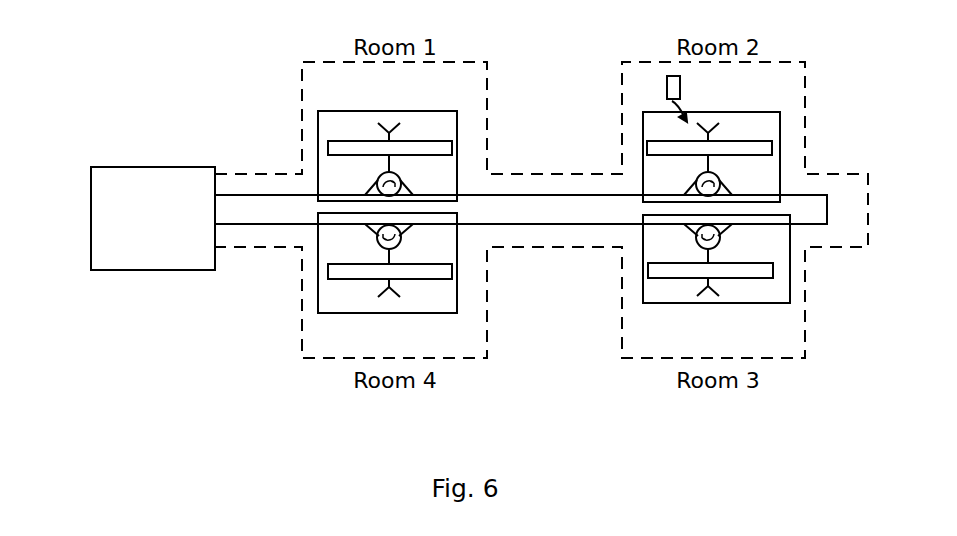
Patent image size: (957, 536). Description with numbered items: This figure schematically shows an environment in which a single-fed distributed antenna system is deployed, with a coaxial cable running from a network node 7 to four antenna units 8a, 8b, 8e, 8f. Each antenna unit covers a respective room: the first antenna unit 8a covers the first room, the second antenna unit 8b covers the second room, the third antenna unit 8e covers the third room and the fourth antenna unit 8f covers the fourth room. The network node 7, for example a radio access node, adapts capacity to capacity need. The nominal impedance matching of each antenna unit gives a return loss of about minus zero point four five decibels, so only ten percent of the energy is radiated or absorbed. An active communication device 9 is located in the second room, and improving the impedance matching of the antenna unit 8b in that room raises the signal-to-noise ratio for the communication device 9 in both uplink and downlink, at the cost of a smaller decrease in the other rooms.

The network node 7 is at (100, 233).
The first antenna unit 8a is at (423, 122).
The second antenna unit 8b is at (748, 122).
The third antenna unit 8e is at (673, 293).
The fourth antenna unit 8f is at (373, 315).
The communication device 9 is at (667, 85).